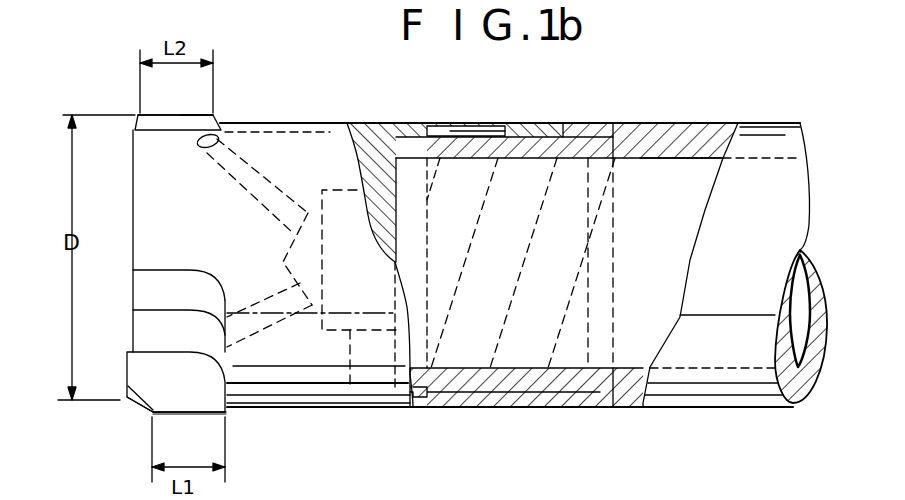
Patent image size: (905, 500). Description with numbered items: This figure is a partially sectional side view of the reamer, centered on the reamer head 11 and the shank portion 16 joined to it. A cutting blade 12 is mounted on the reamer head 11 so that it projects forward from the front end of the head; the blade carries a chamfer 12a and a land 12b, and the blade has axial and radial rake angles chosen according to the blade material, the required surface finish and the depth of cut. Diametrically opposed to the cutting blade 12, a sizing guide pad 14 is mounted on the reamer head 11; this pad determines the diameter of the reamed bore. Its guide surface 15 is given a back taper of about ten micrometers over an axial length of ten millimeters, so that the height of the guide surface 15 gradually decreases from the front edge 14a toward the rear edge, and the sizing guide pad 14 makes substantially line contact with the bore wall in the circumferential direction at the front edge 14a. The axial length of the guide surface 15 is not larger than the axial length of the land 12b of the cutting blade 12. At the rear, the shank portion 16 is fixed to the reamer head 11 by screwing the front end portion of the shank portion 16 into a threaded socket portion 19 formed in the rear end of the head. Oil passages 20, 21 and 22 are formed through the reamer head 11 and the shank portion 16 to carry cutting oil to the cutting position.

The reamer head 11 is at (333, 123).
The cutting blade 12 is at (142, 373).
The chamfer 12a is at (137, 403).
The land 12b is at (190, 417).
The sizing guide pad 14 is at (171, 131).
The front edge 14a is at (136, 113).
The guide surface 15 is at (185, 113).
The shank portion 16 is at (700, 128).
The threaded socket portion 19 is at (512, 122).
The oil passage 20 is at (285, 130).
The oil passage 21 is at (352, 392).
The oil passage 22 is at (667, 160).